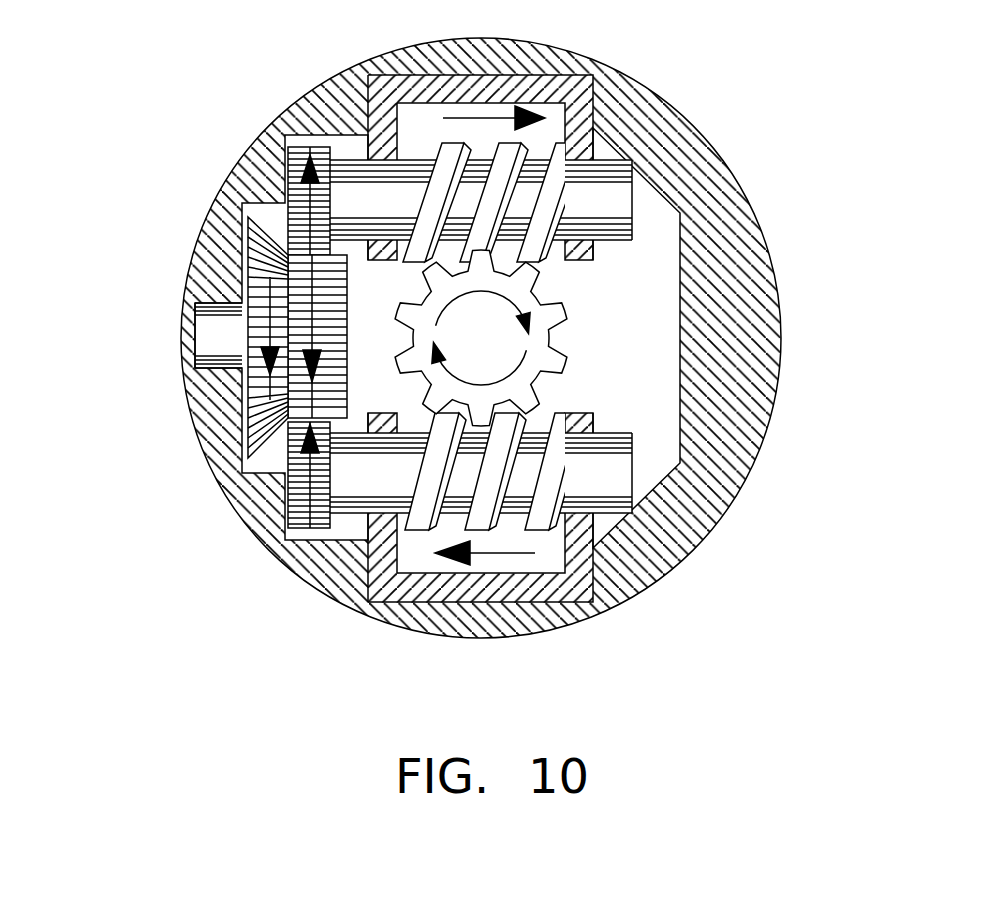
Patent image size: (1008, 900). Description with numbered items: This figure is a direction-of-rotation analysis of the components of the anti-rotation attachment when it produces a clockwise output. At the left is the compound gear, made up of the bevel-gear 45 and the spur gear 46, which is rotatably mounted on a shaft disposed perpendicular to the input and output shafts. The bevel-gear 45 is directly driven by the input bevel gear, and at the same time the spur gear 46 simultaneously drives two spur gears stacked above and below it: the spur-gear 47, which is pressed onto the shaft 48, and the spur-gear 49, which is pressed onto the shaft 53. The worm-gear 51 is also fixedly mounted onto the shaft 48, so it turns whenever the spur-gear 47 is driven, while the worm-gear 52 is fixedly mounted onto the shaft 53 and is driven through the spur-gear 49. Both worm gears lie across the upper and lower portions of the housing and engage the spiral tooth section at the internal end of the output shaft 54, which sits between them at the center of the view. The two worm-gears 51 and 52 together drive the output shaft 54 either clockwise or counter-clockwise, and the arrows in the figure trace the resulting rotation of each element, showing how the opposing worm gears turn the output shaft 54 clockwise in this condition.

The bevel-gear 45 is at (265, 277).
The spur gear 46 is at (302, 393).
The spur-gear 47 is at (302, 190).
The shaft 48 is at (357, 192).
The spur-gear 49 is at (303, 513).
The worm-gear 51 is at (510, 155).
The worm-gear 52 is at (513, 527).
The shaft 53 is at (597, 475).
The output shaft 54 is at (537, 322).